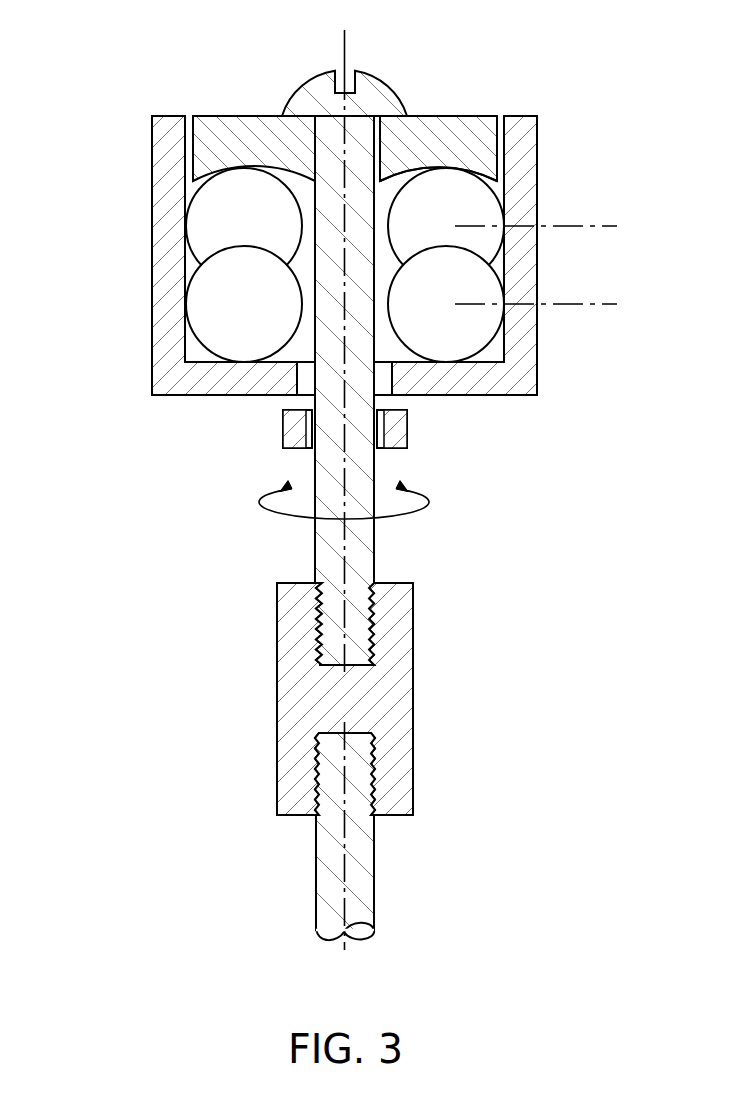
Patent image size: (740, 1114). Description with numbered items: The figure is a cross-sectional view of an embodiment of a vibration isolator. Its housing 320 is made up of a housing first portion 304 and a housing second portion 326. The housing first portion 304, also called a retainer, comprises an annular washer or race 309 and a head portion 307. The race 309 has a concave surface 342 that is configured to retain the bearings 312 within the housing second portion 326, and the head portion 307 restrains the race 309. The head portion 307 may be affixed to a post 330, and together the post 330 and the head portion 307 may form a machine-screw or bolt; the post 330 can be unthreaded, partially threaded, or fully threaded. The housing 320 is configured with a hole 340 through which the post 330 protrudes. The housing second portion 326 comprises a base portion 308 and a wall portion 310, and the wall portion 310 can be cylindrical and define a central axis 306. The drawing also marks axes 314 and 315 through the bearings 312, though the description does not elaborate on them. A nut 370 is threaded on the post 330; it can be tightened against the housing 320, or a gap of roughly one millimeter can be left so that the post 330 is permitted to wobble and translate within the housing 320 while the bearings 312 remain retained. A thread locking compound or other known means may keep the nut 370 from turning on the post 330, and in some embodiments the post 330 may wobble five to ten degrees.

The housing first portion 304 is at (466, 116).
The central axis 306 is at (344, 46).
The head portion 307 is at (380, 73).
The base portion 308 is at (504, 397).
The race 309 is at (222, 116).
The wall portion 310 is at (160, 348).
The bearings 312 is at (220, 211).
The upper ball axis 314 is at (592, 228).
The lower ball axis 315 is at (592, 306).
The housing 320 is at (152, 254).
The housing second portion 326 is at (152, 134).
The post 330 is at (316, 548).
The hole 340 is at (294, 386).
The concave surface 342 is at (480, 178).
The nut 370 is at (398, 430).